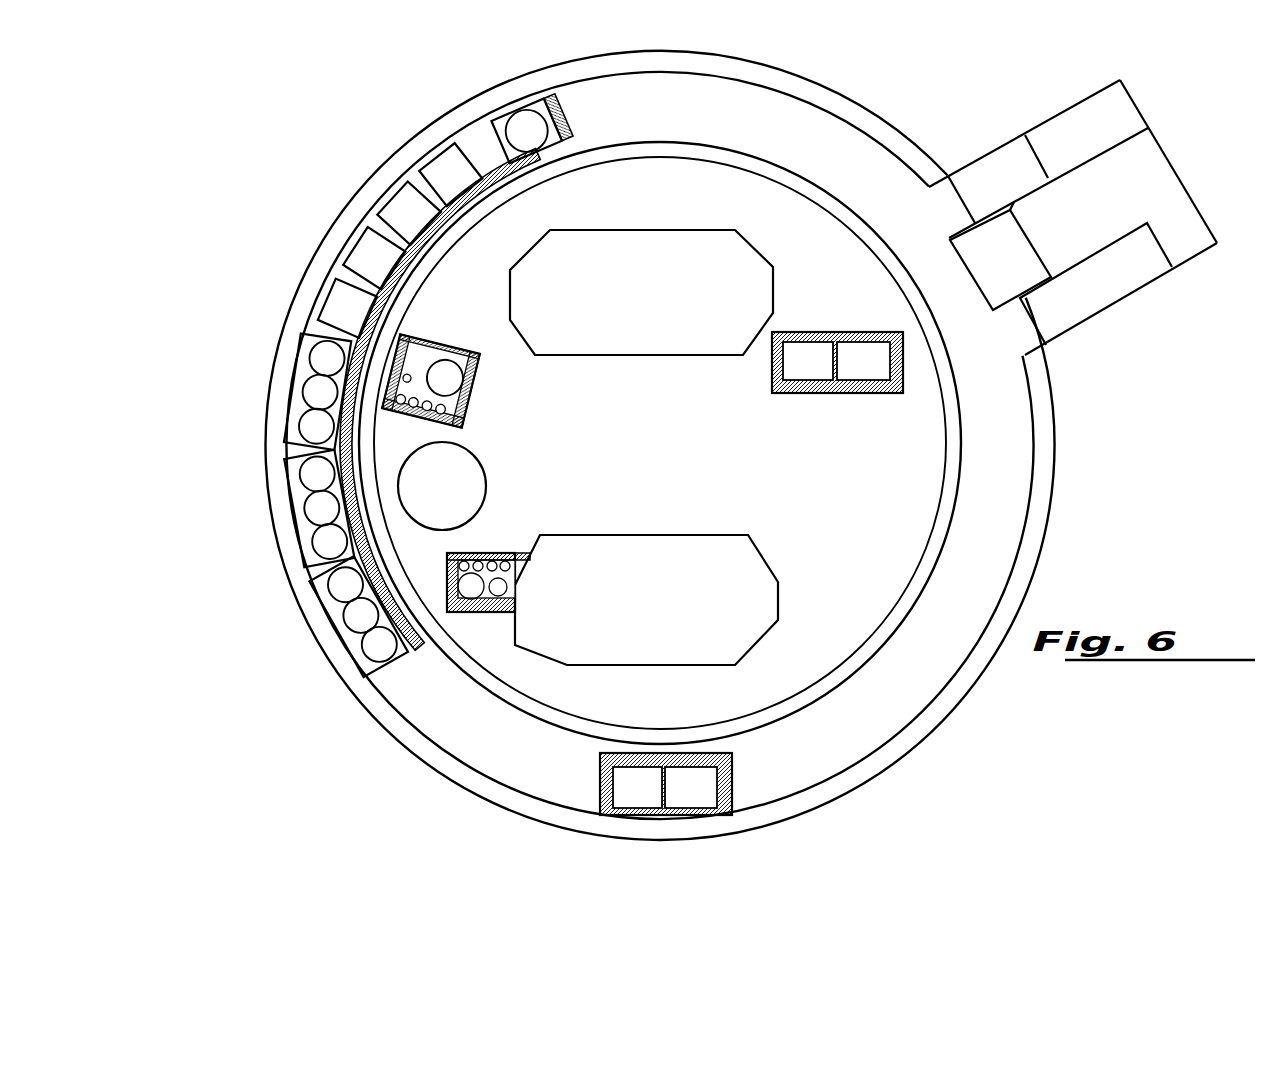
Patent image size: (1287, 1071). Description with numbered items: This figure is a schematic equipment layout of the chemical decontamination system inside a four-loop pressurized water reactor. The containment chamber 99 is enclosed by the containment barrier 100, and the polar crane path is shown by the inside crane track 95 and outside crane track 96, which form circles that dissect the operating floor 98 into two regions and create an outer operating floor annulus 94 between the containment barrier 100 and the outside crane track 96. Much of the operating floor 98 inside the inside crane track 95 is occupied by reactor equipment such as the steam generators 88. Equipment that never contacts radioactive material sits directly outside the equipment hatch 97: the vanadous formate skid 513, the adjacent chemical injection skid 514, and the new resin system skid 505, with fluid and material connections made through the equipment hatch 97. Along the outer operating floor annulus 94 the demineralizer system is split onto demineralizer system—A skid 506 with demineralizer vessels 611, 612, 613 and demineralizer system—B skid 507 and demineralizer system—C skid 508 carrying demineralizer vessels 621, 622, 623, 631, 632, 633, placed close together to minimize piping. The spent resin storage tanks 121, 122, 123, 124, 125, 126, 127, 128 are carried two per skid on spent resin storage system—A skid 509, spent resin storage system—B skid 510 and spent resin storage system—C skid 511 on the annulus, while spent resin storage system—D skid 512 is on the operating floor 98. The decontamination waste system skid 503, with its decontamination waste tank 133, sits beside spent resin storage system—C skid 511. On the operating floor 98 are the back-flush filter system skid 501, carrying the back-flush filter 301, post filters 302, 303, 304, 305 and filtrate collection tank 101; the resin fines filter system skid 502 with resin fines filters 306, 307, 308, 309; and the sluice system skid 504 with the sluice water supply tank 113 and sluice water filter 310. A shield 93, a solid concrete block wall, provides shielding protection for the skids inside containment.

The steam generators 88 is at (622, 305).
The shield 93 is at (727, 575).
The outer operating floor annulus 94 is at (948, 625).
The inside crane track 95 is at (566, 706).
The outside crane track 96 is at (603, 733).
The equipment hatch 97 is at (1003, 315).
The operating floor 98 is at (903, 528).
The containment chamber 99 is at (683, 462).
The containment barrier 100 is at (903, 747).
The filtrate collection tank 101 is at (471, 592).
The sluice water supply tank 113 is at (432, 393).
The spent resin storage tank 121 is at (622, 803).
The spent resin storage tank 122 is at (691, 787).
The spent resin storage tank 123 is at (331, 323).
The spent resin storage tank 124 is at (355, 277).
The spent resin storage tank 125 is at (393, 228).
The spent resin storage tank 126 is at (435, 191).
The spent resin storage tank 127 is at (792, 376).
The spent resin storage tank 128 is at (847, 376).
The decontamination waste tank 133 is at (513, 146).
The back-flush filter 301 is at (498, 596).
The post filter 302 is at (502, 564).
The post filter 303 is at (462, 553).
The post filter 304 is at (490, 558).
The post filter 305 is at (516, 553).
The resin fines filter 306 is at (420, 404).
The resin fines filter 307 is at (420, 412).
The resin fines filter 308 is at (430, 430).
The resin fines filter 309 is at (466, 410).
The sluice water filter 310 is at (407, 378).
The back-flush filter system skid 501 is at (525, 553).
The resin fines filter system skid 502 is at (431, 380).
The decontamination waste system skid 503 is at (515, 100).
The sluice system skid 504 is at (475, 364).
The new resin system skid 505 is at (1082, 300).
The demineralizer system—A skid 506 is at (307, 647).
The demineralizer system—B skid 507 is at (255, 518).
The demineralizer system—C skid 508 is at (257, 374).
The spent resin storage system—A skid 509 is at (675, 815).
The spent resin storage system—B skid 510 is at (335, 268).
The spent resin storage system—C skid 511 is at (418, 177).
The spent resin storage system—D skid 512 is at (855, 389).
The vanadous formate skid 513 is at (974, 198).
The chemical injection skid 514 is at (1062, 146).
The demineralizer vessel 611 is at (362, 648).
The demineralizer vessel 612 is at (340, 613).
The demineralizer vessel 613 is at (317, 574).
The demineralizer vessel 621 is at (307, 531).
The demineralizer vessel 622 is at (302, 501).
The demineralizer vessel 623 is at (297, 468).
The demineralizer vessel 631 is at (295, 424).
The demineralizer vessel 632 is at (297, 389).
The demineralizer vessel 633 is at (308, 353).